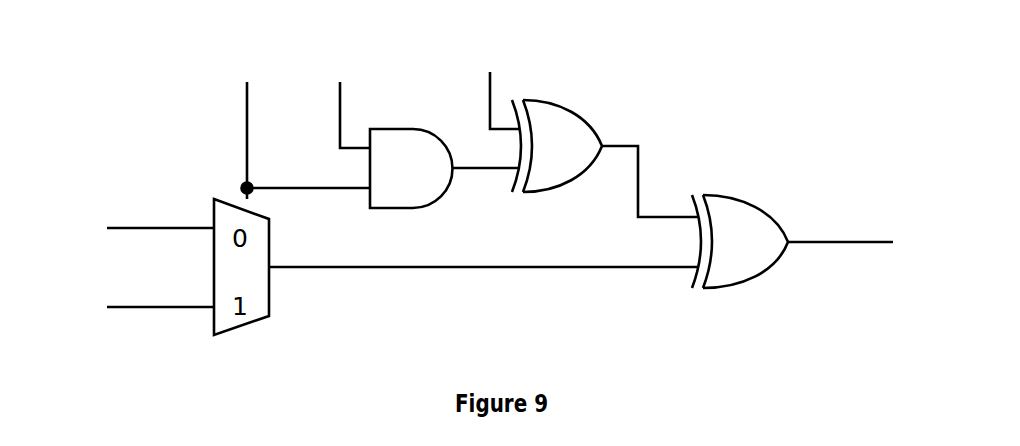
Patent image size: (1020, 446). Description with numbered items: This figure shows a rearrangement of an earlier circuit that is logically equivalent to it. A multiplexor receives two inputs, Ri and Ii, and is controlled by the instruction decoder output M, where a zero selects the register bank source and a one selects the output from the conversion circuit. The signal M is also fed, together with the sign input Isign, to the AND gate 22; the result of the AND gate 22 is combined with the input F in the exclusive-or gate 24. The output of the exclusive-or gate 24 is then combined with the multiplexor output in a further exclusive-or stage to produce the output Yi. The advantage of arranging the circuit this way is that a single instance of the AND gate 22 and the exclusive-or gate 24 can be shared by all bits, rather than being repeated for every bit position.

The AND gate 22 is at (430, 218).
The exclusive-or gate 24 is at (568, 97).
The instruction decoder output M is at (290, 140).
The F signal F is at (493, 96).
The sign input Isign is at (328, 114).
The R input Ri is at (147, 227).
The I input Ii is at (148, 316).
The Y output Yi is at (858, 248).